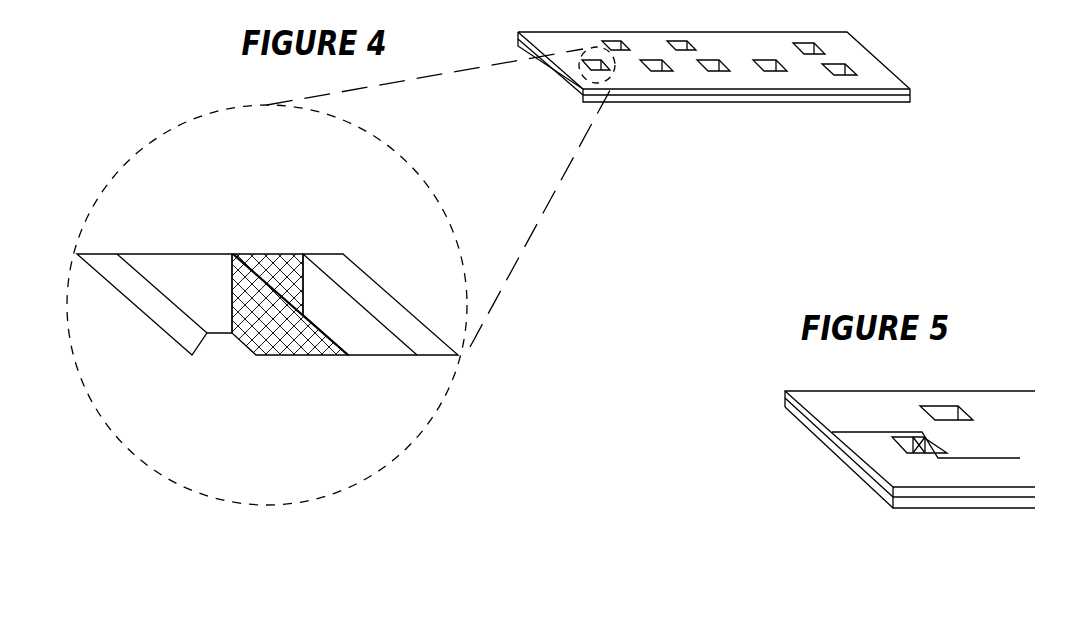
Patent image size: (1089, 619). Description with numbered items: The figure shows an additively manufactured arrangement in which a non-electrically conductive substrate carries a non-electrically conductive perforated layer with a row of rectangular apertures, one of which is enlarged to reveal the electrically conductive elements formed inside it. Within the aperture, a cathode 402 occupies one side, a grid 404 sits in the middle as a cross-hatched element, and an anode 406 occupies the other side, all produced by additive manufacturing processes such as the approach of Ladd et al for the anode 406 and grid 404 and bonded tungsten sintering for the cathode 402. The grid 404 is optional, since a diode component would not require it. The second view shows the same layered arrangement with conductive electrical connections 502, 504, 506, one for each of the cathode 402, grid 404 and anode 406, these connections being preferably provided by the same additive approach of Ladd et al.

In FIG. 4, the cathode 402 is at (173, 323).
In FIG. 4, the grid 404 is at (252, 254).
In FIG. 4, the anode 406 is at (362, 288).
In FIG. 5, the conductive electrical connection 502 is at (832, 433).
In FIG. 5, the conductive electrical connection 504 is at (834, 437).
In FIG. 5, the conductive electrical connection 506 is at (980, 458).